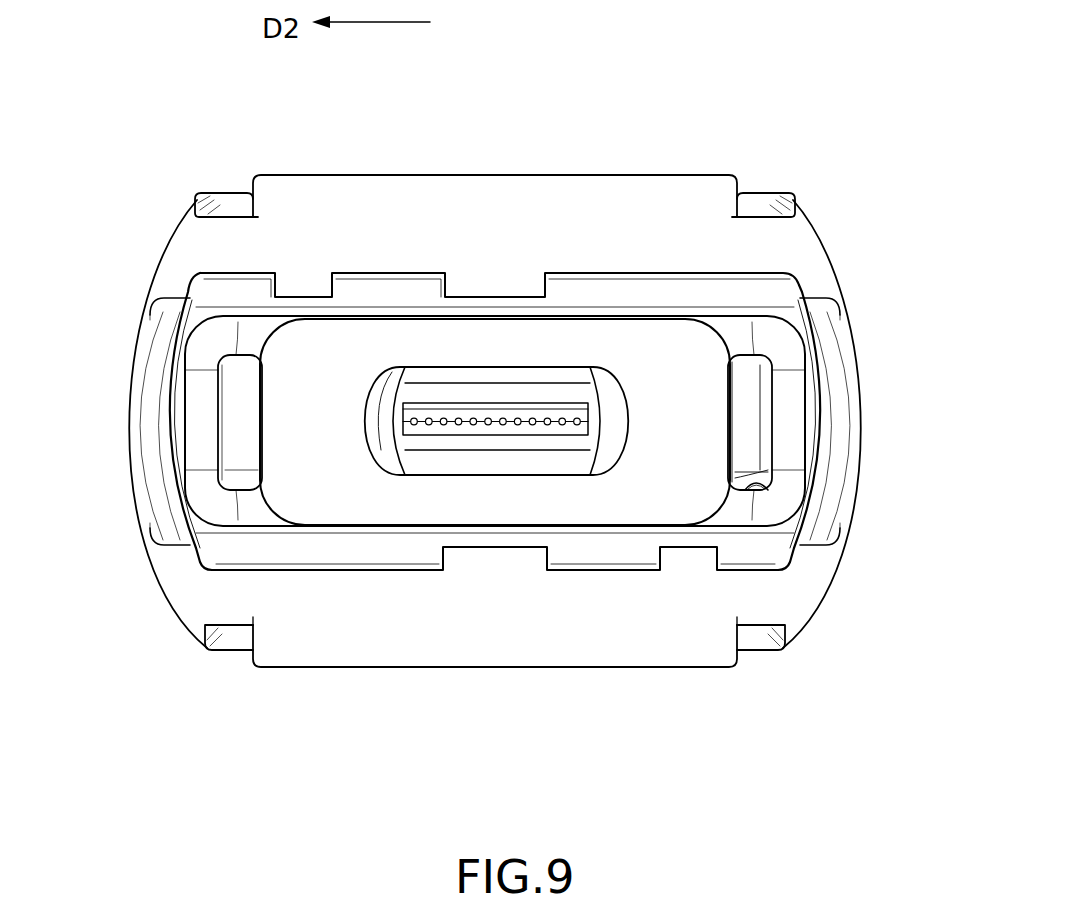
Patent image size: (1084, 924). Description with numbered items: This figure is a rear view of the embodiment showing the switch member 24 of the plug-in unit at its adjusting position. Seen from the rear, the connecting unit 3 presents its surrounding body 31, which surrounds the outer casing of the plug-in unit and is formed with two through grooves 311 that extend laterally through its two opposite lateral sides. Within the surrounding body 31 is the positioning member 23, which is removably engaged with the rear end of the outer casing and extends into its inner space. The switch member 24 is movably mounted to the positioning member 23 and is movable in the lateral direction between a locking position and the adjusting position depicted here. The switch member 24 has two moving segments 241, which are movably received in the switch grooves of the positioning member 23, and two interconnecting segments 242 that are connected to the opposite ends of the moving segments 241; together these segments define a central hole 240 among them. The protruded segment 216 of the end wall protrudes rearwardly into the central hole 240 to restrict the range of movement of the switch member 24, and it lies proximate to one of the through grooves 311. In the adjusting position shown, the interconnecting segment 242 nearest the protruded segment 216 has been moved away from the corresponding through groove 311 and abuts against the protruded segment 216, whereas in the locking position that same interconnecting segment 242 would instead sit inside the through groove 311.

The connecting unit 3 is at (702, 145).
The surrounding body 31 is at (548, 190).
The through groove 311 is at (167, 333).
The switch member 24 is at (178, 443).
The moving segment 241 is at (255, 325).
The interconnecting segment 242 is at (190, 403).
The protruded segment 216 is at (755, 421).
The central hole 240 is at (767, 483).
The positioning member 23 is at (340, 545).